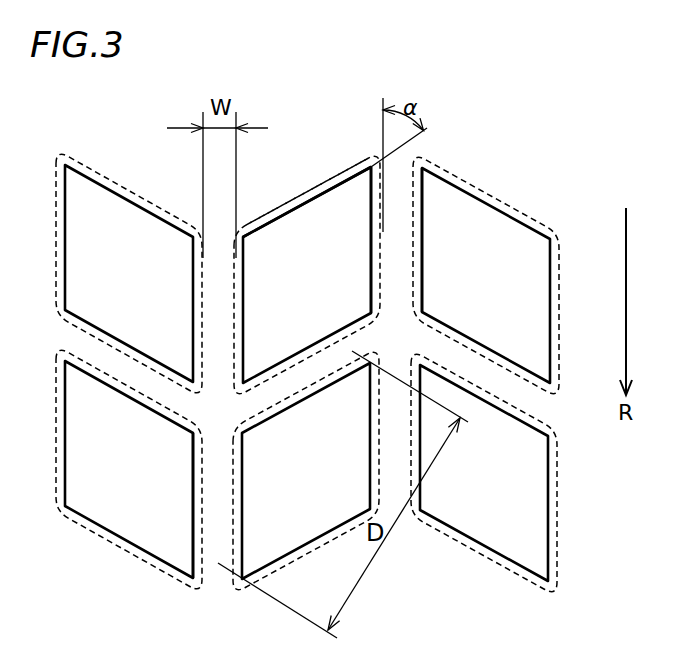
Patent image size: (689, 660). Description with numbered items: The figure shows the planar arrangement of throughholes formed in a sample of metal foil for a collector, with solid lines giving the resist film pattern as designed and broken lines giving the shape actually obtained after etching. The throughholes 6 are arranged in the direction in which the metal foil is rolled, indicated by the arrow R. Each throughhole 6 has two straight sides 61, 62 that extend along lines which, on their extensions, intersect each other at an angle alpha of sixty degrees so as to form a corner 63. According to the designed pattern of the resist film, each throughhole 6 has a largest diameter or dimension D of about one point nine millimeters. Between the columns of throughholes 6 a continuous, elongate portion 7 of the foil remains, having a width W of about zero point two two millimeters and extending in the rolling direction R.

The throughhole 6 is at (76, 216).
The straight side 61 is at (307, 191).
The straight side 62 is at (385, 258).
The corner 63 is at (357, 193).
The continuous elongate portion 7 is at (397, 275).